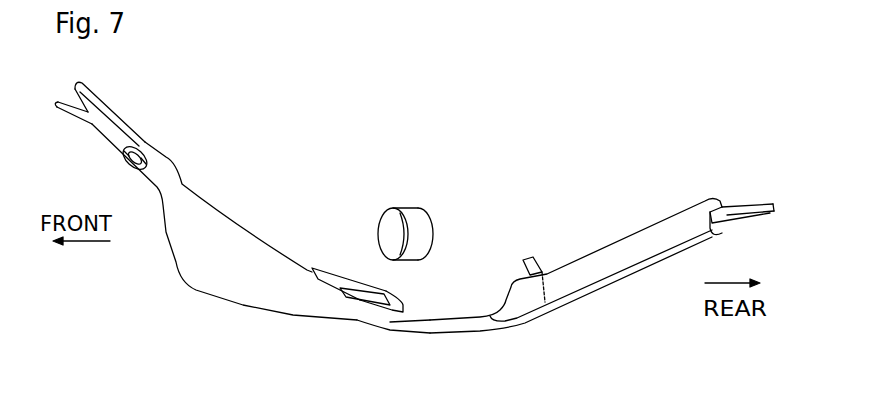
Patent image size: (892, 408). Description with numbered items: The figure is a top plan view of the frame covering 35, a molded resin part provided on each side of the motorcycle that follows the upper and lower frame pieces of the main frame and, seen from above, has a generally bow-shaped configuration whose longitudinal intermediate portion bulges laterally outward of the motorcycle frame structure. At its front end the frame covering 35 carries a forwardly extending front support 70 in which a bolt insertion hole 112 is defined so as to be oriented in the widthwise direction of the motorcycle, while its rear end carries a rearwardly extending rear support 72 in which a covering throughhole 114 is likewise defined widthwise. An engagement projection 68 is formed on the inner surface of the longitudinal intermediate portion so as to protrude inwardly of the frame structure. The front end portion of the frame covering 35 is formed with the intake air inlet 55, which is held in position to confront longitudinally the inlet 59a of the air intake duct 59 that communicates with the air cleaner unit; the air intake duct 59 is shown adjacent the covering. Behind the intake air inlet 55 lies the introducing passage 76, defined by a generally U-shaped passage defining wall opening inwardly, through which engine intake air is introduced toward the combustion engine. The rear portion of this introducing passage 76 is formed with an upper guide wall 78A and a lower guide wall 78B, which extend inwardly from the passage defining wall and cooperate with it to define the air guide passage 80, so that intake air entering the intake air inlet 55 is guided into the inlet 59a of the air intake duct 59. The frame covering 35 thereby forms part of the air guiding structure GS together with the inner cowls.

The frame covering 35 is at (568, 331).
The intake air inlet 55 is at (173, 246).
The air intake duct 59 is at (412, 200).
The inlet of the air intake duct 59a is at (379, 215).
The engagement projection 68 is at (537, 257).
The front support 70 is at (82, 128).
The rear support 72 is at (772, 203).
The introducing passage 76 is at (230, 258).
The upper guide wall 78A is at (388, 312).
The lower guide wall 78B is at (317, 263).
The air guide passage 80 is at (340, 281).
The bolt insertion hole 112 is at (137, 142).
The covering throughhole 114 is at (738, 205).